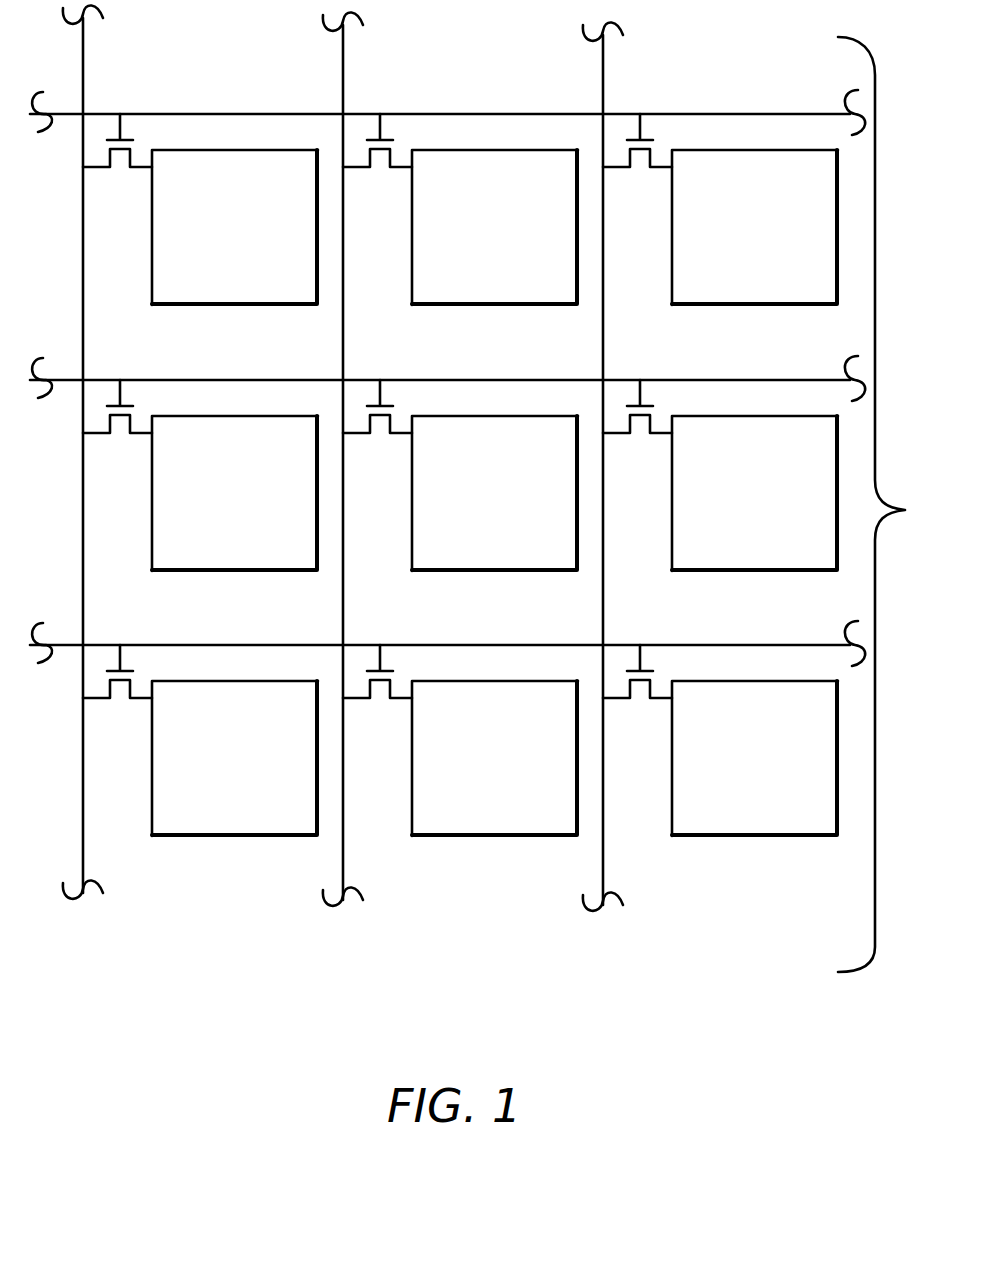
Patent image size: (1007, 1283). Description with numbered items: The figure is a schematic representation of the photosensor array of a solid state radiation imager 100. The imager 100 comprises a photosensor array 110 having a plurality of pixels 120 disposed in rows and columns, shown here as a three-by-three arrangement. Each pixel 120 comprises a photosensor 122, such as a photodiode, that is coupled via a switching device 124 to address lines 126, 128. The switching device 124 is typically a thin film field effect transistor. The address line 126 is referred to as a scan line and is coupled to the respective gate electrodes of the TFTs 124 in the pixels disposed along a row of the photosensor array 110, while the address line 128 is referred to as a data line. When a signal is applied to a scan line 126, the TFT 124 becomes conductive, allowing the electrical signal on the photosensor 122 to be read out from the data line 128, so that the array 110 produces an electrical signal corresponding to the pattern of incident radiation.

The solid state radiation imager 100 is at (535, 962).
The photosensor array 110 is at (905, 510).
The pixel 120 is at (460, 467).
The photosensor 122 is at (213, 242).
The switching device 124 is at (93, 106).
The scan line 126 is at (68, 117).
The data line 128 is at (77, 329).